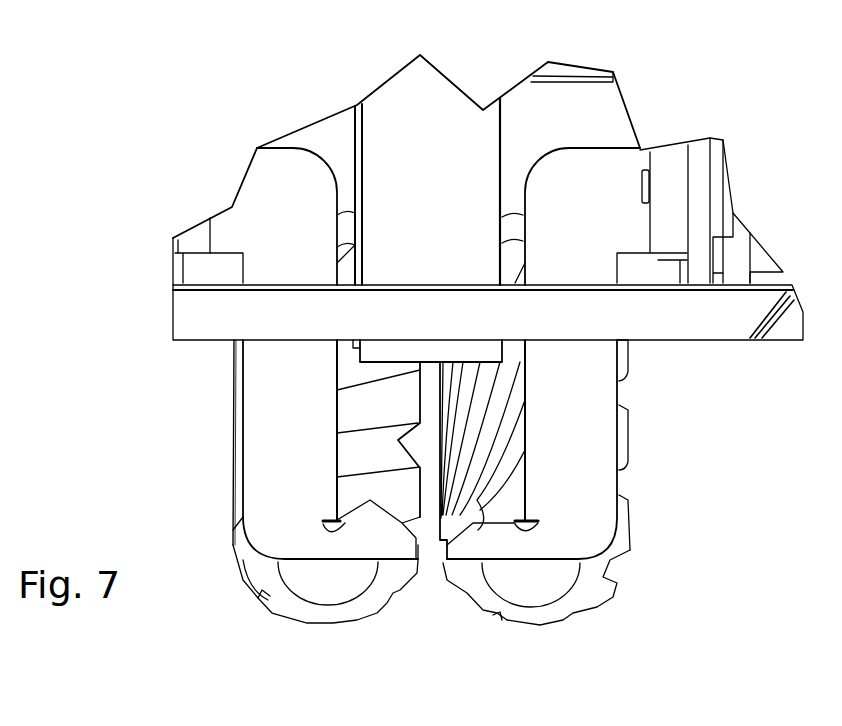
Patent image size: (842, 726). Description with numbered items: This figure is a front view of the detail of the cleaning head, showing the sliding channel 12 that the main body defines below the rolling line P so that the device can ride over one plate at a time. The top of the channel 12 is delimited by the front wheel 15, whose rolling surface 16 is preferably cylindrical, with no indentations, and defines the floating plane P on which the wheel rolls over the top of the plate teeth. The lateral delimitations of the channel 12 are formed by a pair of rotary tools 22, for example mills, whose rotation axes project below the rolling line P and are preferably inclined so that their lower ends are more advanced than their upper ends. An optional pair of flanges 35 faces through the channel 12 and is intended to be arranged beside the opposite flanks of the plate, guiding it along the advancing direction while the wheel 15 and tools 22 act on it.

The sliding channel 12 is at (427, 530).
The front wheel 15 is at (360, 128).
The rolling surface 16 is at (423, 362).
The rotary tool 22 is at (238, 559).
The flange 35 is at (273, 428).
The rolling line P is at (396, 358).